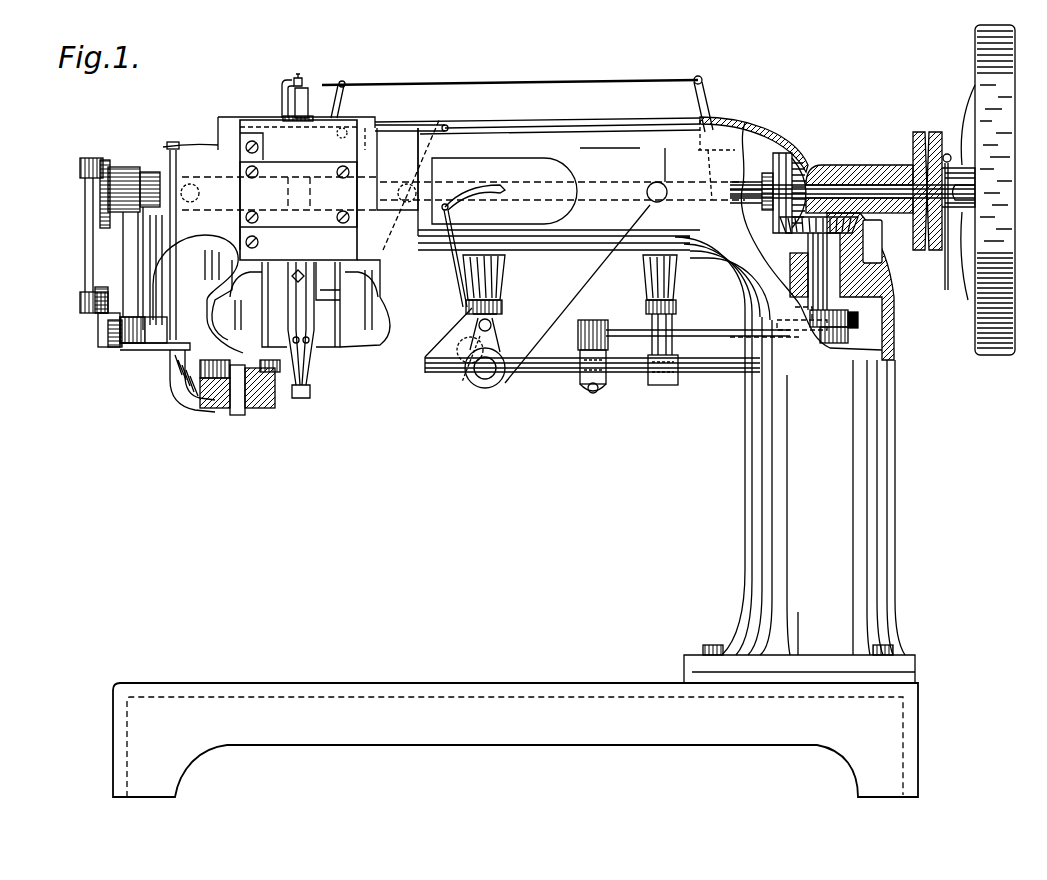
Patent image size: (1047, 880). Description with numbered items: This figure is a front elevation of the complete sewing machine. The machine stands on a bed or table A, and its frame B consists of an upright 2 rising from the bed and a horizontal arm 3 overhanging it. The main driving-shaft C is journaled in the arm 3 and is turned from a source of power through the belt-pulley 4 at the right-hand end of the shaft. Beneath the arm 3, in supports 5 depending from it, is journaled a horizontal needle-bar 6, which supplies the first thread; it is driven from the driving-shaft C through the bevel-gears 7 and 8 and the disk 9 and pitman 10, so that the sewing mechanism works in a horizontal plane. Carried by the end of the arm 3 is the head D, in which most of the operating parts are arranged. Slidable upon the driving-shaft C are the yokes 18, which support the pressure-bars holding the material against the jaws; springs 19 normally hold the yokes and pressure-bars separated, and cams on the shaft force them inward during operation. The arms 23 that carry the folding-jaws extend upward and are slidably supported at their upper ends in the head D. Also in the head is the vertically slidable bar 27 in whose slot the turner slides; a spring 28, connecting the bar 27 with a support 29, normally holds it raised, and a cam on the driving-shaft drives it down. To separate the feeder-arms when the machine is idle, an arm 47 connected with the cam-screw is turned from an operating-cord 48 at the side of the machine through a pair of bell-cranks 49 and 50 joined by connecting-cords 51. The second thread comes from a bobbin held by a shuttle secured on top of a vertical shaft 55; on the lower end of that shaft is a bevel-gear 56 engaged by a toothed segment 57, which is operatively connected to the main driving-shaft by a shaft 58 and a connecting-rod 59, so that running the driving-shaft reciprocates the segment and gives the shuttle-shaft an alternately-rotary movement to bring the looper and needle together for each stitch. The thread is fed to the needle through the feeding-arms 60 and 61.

The bed or table A is at (515, 740).
The frame B is at (727, 268).
The main driving-shaft C is at (830, 190).
The head D is at (280, 190).
The upright 2 is at (802, 386).
The horizontal arm 3 is at (481, 250).
The belt-pulley 4 is at (941, 192).
The bearings 5 is at (505, 305).
The horizontal needle-bar 6 is at (553, 368).
The bevel-gear 7 is at (782, 153).
The bevel-gear 8 is at (796, 230).
The disk 9 is at (850, 312).
The pitman 10 is at (715, 336).
The yokes 18 is at (275, 292).
The springs 19 is at (320, 116).
The arms 23 is at (212, 297).
The bar 27 is at (308, 92).
The spring 28 is at (300, 75).
The support 29 is at (280, 82).
The arm 47 is at (352, 282).
The operating-cord 48 is at (402, 185).
The bell-crank 49 is at (348, 110).
The bell-crank 50 is at (705, 96).
The connecting-cords 51 is at (487, 86).
The vertical shaft 55 is at (248, 412).
The bevel-gear 56 is at (262, 408).
The toothed segment 57 is at (185, 408).
The shaft 58 is at (118, 352).
The connecting-rod 59 is at (84, 272).
The feeding-arm 60 is at (495, 326).
The feeding-arm 61 is at (470, 198).